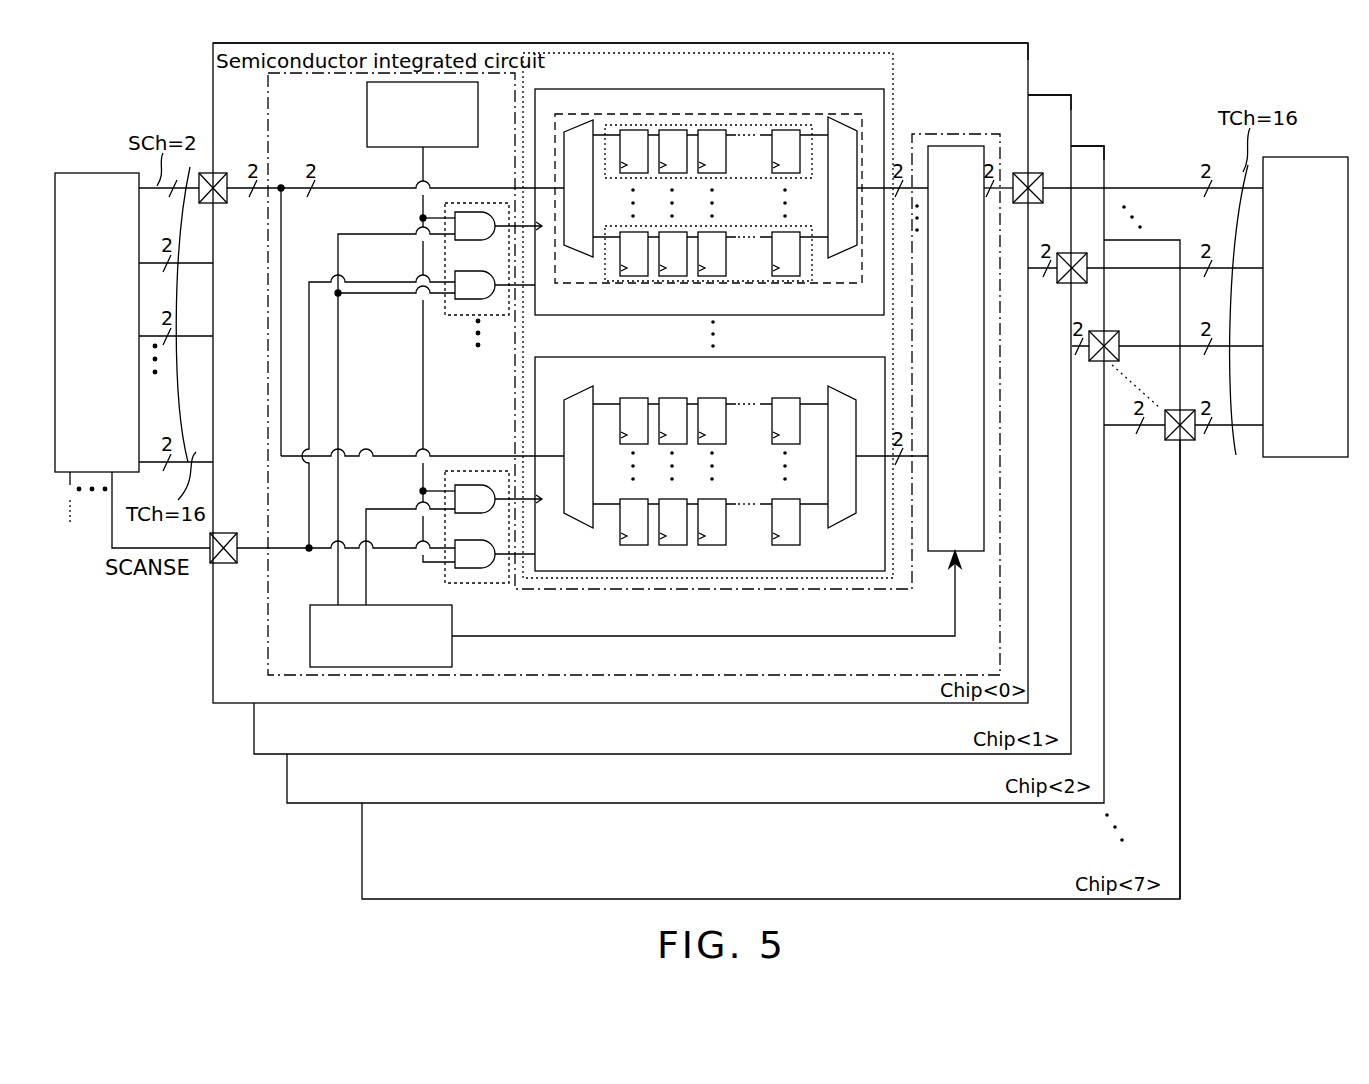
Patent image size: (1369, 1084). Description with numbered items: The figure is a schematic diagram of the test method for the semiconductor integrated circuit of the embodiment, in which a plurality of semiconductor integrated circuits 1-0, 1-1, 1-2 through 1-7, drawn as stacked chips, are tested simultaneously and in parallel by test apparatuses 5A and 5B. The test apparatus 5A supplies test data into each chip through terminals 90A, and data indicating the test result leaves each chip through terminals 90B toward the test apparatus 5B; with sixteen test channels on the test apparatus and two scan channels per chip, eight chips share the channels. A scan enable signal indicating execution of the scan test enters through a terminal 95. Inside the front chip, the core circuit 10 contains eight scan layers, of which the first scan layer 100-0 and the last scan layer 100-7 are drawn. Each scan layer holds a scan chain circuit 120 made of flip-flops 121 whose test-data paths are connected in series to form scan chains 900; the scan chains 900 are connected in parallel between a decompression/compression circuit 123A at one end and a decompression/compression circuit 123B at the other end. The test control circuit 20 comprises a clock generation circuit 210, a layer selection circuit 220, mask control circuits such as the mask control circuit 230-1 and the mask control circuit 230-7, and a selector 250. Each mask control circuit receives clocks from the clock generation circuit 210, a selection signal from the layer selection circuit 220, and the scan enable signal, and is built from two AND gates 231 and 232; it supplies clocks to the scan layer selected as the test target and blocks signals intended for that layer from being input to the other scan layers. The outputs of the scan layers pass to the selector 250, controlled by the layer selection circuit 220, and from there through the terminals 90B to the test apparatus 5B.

The test apparatus 5A is at (81, 173).
The test apparatus 5B is at (1305, 457).
The terminal 90A is at (225, 204).
The terminal 90B is at (1030, 173).
The terminal 95 is at (228, 564).
The clock generation circuit 210 is at (367, 114).
The layer selection circuit 220 is at (452, 660).
The mask control circuit 230-1 is at (485, 299).
The mask control circuit 230-7 is at (473, 584).
The AND gate 231 is at (455, 241).
The AND gate 232 is at (462, 300).
The core circuit 10 is at (893, 58).
The test control circuit 20 is at (976, 314).
The selector 250 is at (957, 146).
The scan layer 100-0 is at (709, 187).
The scan layer 100-7 is at (858, 357).
The scan chain circuit 120 is at (557, 114).
The flip-flop 121 is at (620, 130).
The decompression/compression circuit 123A is at (570, 257).
The decompression/compression circuit 123B is at (846, 258).
The scan chain 900 is at (800, 125).
The semiconductor integrated circuit 1-0 is at (1030, 60).
The semiconductor integrated circuit 1-1 is at (1073, 108).
The semiconductor integrated circuit 1-2 is at (1106, 158).
The semiconductor integrated circuit 1-7 is at (1181, 490).